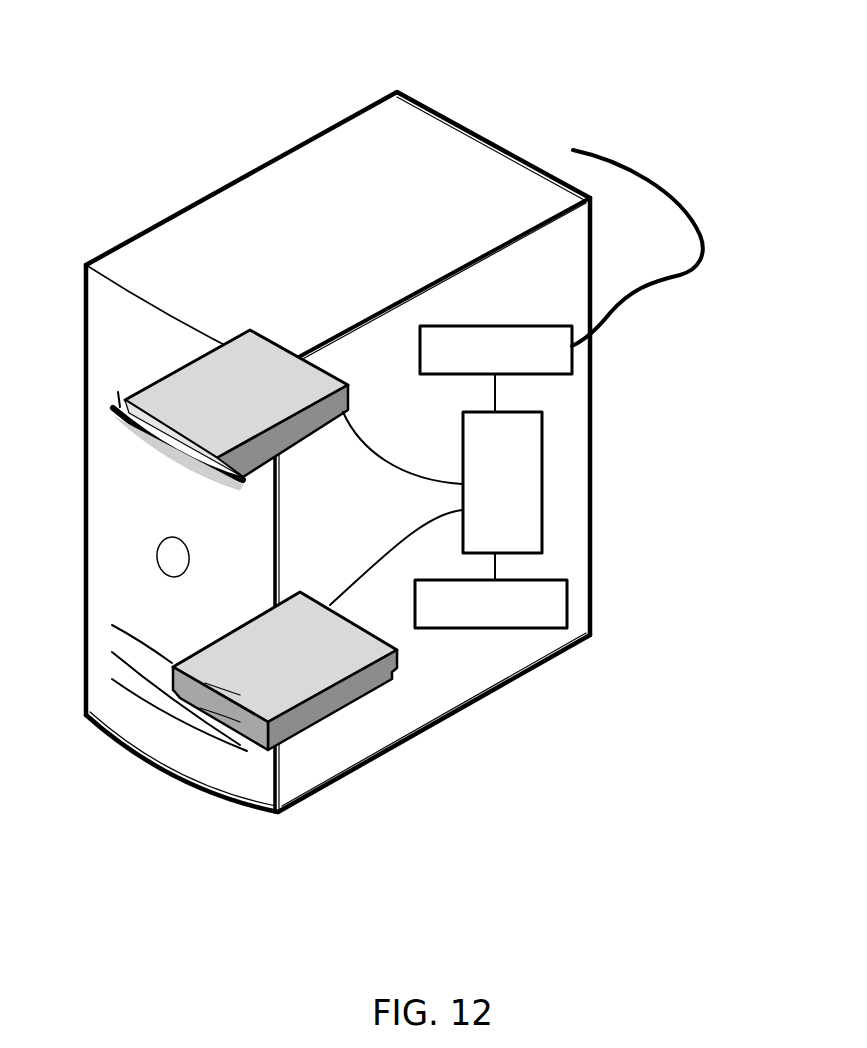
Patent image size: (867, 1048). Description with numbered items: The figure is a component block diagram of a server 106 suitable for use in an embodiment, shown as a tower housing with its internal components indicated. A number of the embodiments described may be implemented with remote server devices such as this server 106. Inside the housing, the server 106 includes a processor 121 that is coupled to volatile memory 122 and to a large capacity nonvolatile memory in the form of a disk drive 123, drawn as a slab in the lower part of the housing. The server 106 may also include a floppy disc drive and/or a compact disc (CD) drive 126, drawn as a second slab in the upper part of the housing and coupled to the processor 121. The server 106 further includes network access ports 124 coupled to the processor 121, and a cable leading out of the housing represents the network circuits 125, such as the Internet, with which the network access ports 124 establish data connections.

The server 106 is at (393, 91).
The processor 121 is at (481, 497).
The volatile memory 122 is at (471, 617).
The disk drive 123 is at (398, 662).
The network access ports 124 is at (476, 364).
The network circuits 125 is at (653, 285).
The compact disc (CD) drive 126 is at (313, 436).